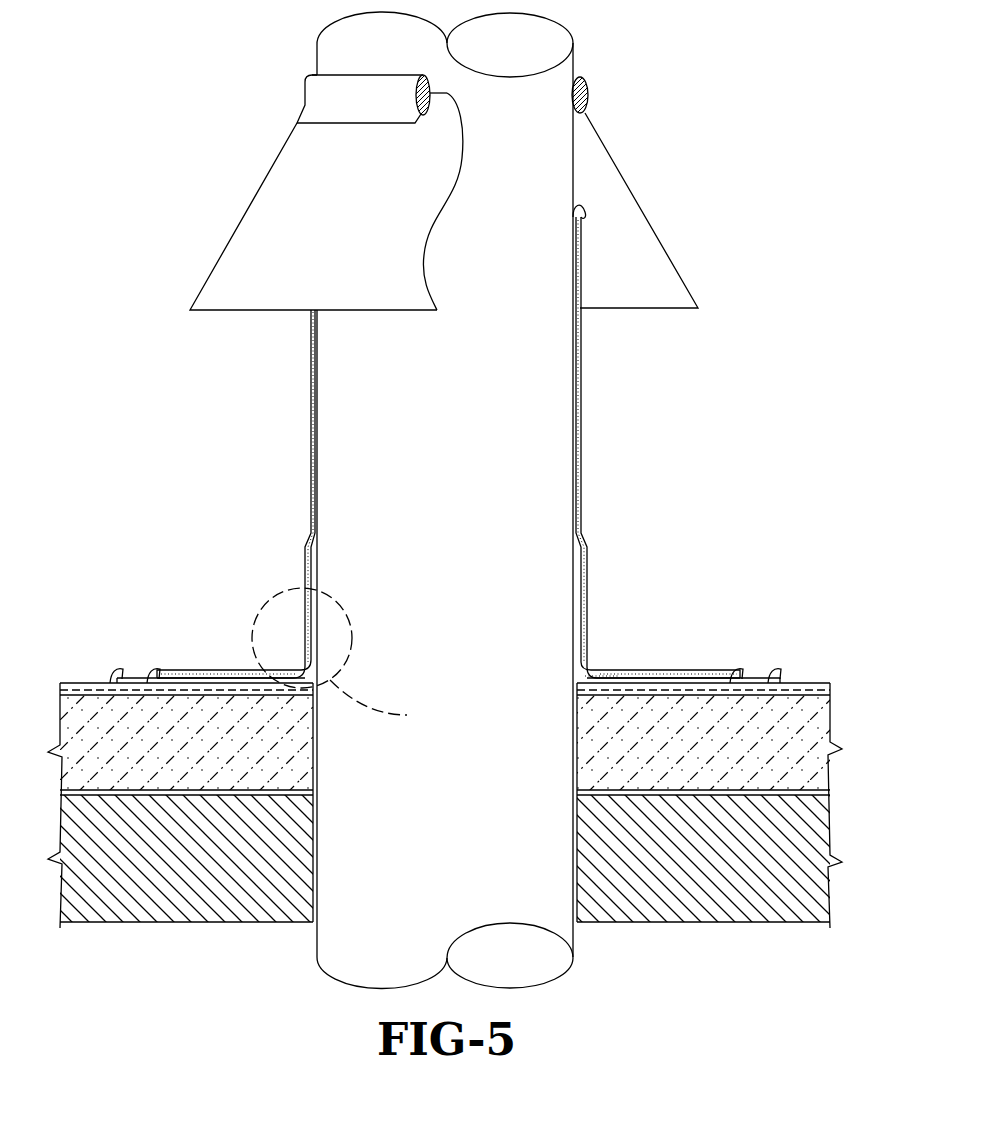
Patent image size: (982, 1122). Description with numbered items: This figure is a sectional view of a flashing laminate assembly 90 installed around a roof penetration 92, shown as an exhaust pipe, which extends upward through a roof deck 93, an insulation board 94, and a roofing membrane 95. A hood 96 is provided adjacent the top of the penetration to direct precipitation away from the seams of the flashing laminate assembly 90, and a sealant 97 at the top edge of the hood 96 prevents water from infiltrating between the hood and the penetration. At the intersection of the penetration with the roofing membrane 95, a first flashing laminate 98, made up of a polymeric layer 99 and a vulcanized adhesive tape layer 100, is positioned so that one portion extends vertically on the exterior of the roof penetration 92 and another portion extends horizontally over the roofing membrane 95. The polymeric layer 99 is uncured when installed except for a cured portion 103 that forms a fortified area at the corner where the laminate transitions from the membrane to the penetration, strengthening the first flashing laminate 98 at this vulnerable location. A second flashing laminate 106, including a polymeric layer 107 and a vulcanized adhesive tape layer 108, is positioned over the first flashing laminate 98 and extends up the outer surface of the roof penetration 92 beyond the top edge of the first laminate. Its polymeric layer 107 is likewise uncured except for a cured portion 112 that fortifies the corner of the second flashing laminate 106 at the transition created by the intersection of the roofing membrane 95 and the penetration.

The flashing laminate assembly 90 is at (650, 540).
The roof penetration 92 is at (457, 498).
The roof deck 93 is at (735, 875).
The insulation board 94 is at (445, 786).
The roofing membrane 95 is at (800, 681).
The hood 96 is at (620, 233).
The sealant 97 is at (587, 89).
The first flashing laminate 98 is at (136, 672).
The polymeric layer 99 is at (757, 677).
The vulcanized adhesive tape layer 100 is at (757, 682).
The cured portion 103 is at (608, 675).
The second flashing laminate 106 is at (668, 667).
The polymeric layer 107 is at (218, 670).
The vulcanized adhesive tape layer 108 is at (317, 433).
The cured portion 112 is at (288, 672).